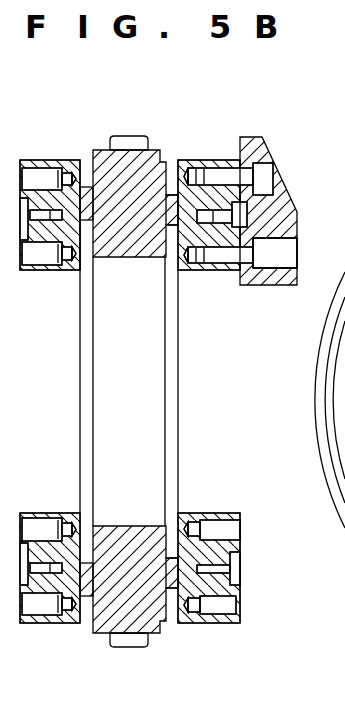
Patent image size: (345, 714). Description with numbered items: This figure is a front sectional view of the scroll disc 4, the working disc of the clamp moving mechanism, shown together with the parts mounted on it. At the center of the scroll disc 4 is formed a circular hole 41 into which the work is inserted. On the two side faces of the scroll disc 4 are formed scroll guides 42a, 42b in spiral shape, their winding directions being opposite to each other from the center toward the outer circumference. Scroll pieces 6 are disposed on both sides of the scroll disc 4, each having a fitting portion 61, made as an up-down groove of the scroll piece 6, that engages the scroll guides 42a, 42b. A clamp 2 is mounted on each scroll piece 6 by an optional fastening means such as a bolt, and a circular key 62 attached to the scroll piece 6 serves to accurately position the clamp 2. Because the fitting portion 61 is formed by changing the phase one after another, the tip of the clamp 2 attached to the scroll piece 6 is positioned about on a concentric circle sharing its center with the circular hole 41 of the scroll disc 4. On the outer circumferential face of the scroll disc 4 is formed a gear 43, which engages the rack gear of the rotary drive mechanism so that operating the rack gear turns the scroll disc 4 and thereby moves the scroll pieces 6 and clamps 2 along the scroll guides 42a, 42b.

The clamp 2 is at (297, 226).
The scroll disc 4 is at (184, 390).
The scroll piece 6 is at (50, 159).
The circular hole 41 is at (137, 256).
The scroll guide 42a is at (97, 170).
The scroll guide 42b is at (160, 165).
The gear 43 is at (134, 136).
The fitting portion 61 is at (80, 218).
The circular key 62 is at (283, 170).